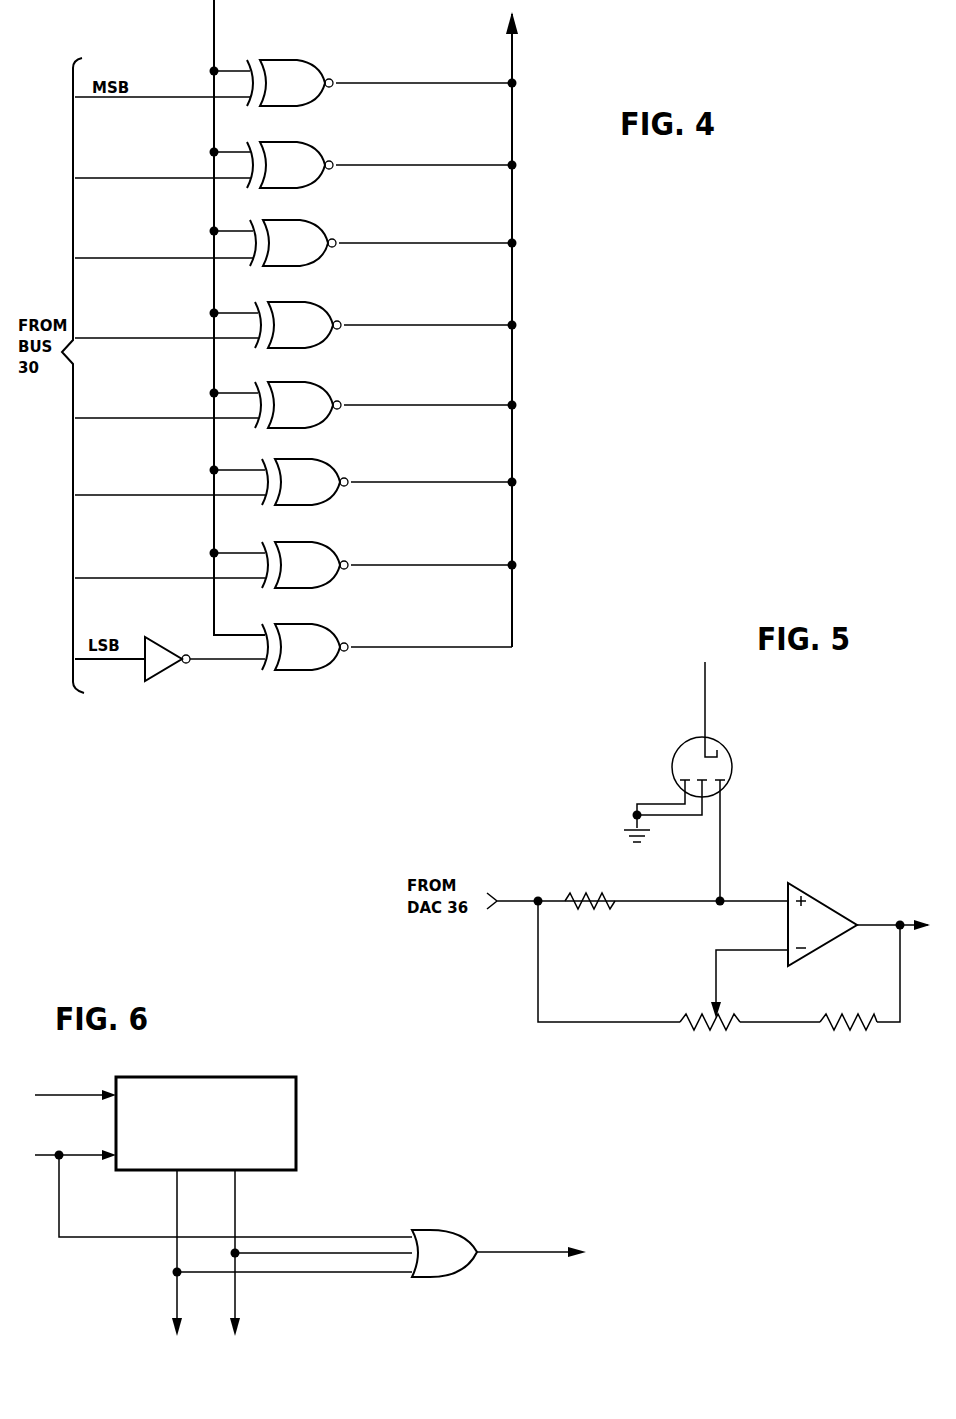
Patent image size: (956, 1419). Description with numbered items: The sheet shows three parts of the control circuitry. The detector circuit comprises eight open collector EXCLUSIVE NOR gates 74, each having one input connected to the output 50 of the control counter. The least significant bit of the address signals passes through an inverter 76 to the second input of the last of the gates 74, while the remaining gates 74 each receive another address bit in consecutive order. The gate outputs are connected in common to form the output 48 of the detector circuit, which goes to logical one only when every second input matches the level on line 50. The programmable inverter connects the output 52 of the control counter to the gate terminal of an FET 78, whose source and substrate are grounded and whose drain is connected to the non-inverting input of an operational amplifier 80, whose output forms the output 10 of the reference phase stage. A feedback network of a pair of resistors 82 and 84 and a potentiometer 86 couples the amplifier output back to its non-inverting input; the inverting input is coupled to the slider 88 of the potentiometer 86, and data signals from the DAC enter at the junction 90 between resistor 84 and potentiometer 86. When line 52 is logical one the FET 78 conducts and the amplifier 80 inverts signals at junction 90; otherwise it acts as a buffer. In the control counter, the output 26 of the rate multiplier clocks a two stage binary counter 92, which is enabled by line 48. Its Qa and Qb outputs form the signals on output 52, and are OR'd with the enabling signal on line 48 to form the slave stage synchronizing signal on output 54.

In FIG. 4, the output of the control counter 50 is at (216, 28).
In FIG. 6, the output of the control counter 50 is at (175, 1295).
In FIG. 4, the output of the detector circuit 48 is at (514, 50).
In FIG. 6, the output of the detector circuit 48 is at (50, 1153).
In FIG. 4, the EXCLUSIVE NOR gates 74 is at (300, 62).
In FIG. 4, the inverter 76 is at (170, 674).
In FIG. 5, the output of the control counter 52 is at (707, 718).
In FIG. 6, the output of the control counter 52 is at (238, 1304).
In FIG. 5, the FET 78 is at (733, 765).
In FIG. 5, the resistor 84 is at (590, 893).
In FIG. 5, the junction 90 is at (541, 904).
In FIG. 5, the slider 88 is at (714, 972).
In FIG. 5, the potentiometer 86 is at (735, 1028).
In FIG. 5, the resistor 82 is at (857, 1027).
In FIG. 5, the operational amplifier 80 is at (812, 892).
In FIG. 5, the output of the reference phase stage 10 is at (900, 918).
In FIG. 6, the two stage binary counter 92 is at (290, 1092).
In FIG. 6, the output of the rate multiplier 26 is at (58, 1092).
In FIG. 6, the output of the control counter 54 is at (512, 1254).